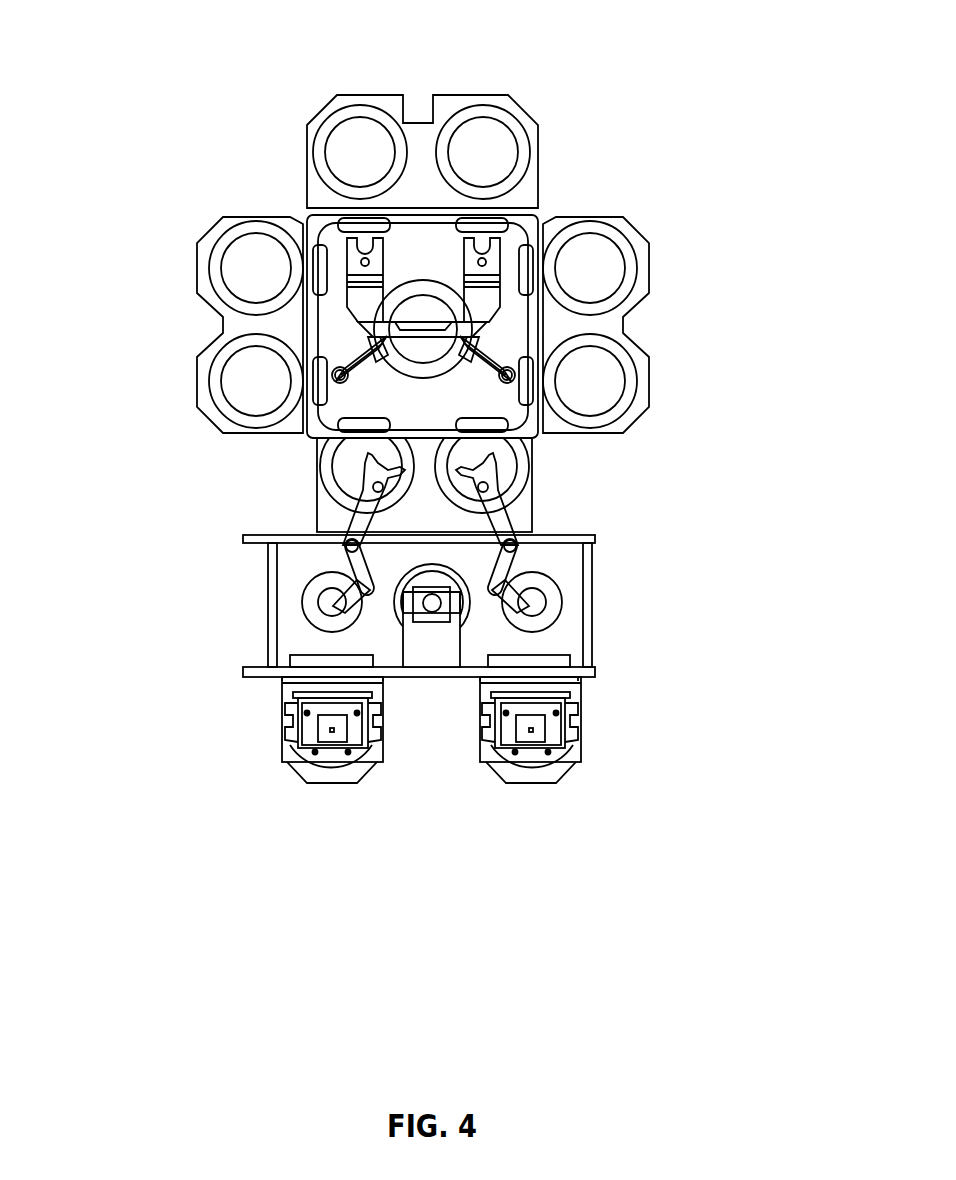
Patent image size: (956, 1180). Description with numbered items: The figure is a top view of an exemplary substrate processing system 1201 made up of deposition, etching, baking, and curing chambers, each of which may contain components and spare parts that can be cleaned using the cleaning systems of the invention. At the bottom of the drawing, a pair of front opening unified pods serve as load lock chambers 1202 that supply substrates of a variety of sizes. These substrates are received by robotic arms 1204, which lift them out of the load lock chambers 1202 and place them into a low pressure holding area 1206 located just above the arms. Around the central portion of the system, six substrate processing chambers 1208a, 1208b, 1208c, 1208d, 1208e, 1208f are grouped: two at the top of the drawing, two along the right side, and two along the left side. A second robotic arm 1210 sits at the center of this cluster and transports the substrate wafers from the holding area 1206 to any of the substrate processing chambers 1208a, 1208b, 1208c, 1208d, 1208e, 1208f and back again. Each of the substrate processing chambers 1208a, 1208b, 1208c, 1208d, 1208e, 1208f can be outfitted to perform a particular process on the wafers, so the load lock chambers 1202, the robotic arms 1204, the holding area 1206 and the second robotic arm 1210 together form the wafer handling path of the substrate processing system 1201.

The substrate processing system 1201 is at (195, 56).
The load lock chambers 1202 is at (531, 737).
The robotic arms 1204 is at (363, 510).
The low pressure holding area 1206 is at (525, 470).
The substrate processing chamber 1208a is at (371, 140).
The substrate processing chamber 1208b is at (497, 140).
The substrate processing chamber 1208c is at (605, 273).
The substrate processing chamber 1208d is at (603, 383).
The substrate processing chamber 1208e is at (253, 272).
The substrate processing chamber 1208f is at (257, 388).
The second robotic arm 1210 is at (482, 297).